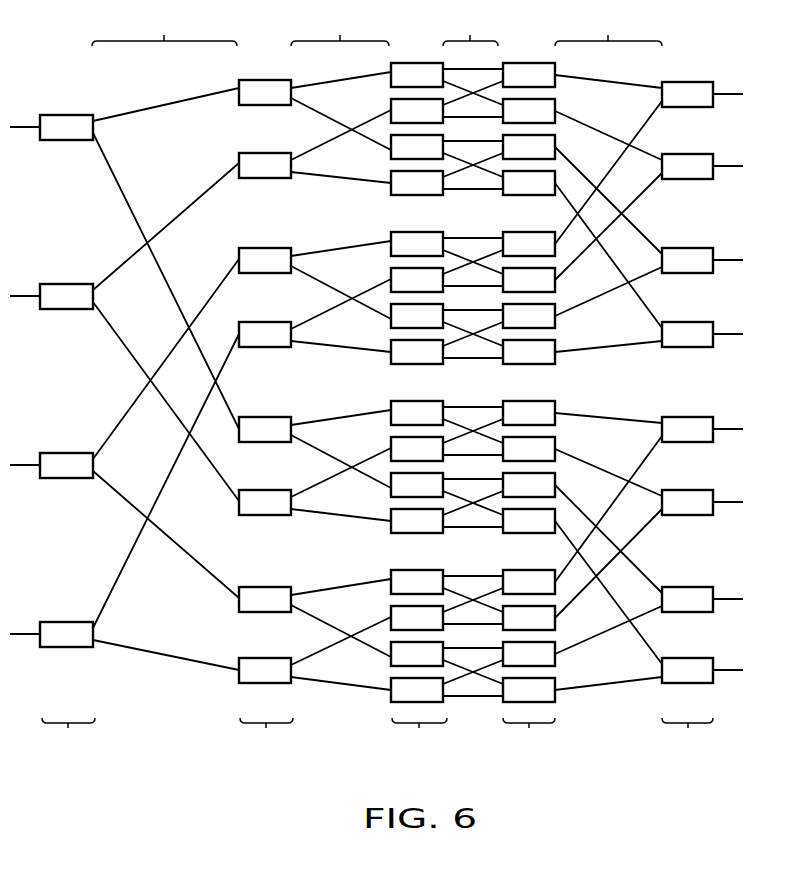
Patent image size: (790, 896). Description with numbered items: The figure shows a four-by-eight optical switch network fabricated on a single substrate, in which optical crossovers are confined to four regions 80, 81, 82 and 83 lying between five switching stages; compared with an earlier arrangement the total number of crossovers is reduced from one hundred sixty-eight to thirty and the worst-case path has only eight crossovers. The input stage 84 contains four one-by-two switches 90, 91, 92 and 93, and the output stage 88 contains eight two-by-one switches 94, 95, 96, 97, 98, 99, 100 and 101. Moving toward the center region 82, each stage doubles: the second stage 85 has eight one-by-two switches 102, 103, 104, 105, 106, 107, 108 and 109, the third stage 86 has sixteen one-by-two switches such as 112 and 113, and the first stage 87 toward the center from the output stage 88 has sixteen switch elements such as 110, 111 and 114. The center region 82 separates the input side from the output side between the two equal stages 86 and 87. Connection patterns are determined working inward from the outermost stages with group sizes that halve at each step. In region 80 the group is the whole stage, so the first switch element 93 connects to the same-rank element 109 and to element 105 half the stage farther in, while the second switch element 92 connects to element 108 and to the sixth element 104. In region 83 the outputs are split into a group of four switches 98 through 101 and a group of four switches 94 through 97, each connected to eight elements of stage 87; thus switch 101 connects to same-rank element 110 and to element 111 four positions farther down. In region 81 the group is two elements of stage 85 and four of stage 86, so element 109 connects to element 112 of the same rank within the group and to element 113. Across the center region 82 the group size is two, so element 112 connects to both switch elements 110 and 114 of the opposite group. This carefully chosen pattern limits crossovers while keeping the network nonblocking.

The region 80 is at (164, 27).
The region 81 is at (340, 27).
The center region 82 is at (470, 27).
The region 83 is at (608, 27).
The input stage 84 is at (68, 736).
The second stage 85 is at (266, 736).
The third stage 86 is at (419, 736).
The first stage toward the center from output stage 87 is at (529, 736).
The output stage 88 is at (687, 736).
The 1-by-2 switch 90 is at (66, 622).
The 1-by-2 switch 91 is at (66, 453).
The 1-by-2 switch 92 is at (66, 284).
The 1-by-2 switch 93 is at (66, 115).
The 2-by-1 switch 94 is at (688, 657).
The 2-by-1 switch 95 is at (688, 586).
The 2-by-1 switch 96 is at (688, 489).
The 2-by-1 switch 97 is at (688, 416).
The 2-by-1 switch 98 is at (688, 321).
The 2-by-1 switch 99 is at (688, 247).
The 2-by-1 switch 100 is at (688, 153).
The 2-by-1 switch 101 is at (688, 81).
The 1-by-2 switch 102 is at (265, 658).
The 1-by-2 switch 103 is at (265, 587).
The 1-by-2 switch 104 is at (265, 490).
The 1-by-2 switch 105 is at (265, 417).
The 1-by-2 switch 106 is at (265, 322).
The 1-by-2 switch 107 is at (265, 248).
The 1-by-2 switch 108 is at (265, 153).
The 1-by-2 switch 109 is at (265, 80).
The switch element 110 is at (528, 62).
The switch element 111 is at (528, 231).
The 1-by-2 switch 112 is at (417, 62).
The 1-by-2 switch 113 is at (391, 150).
The switch element 114 is at (556, 144).